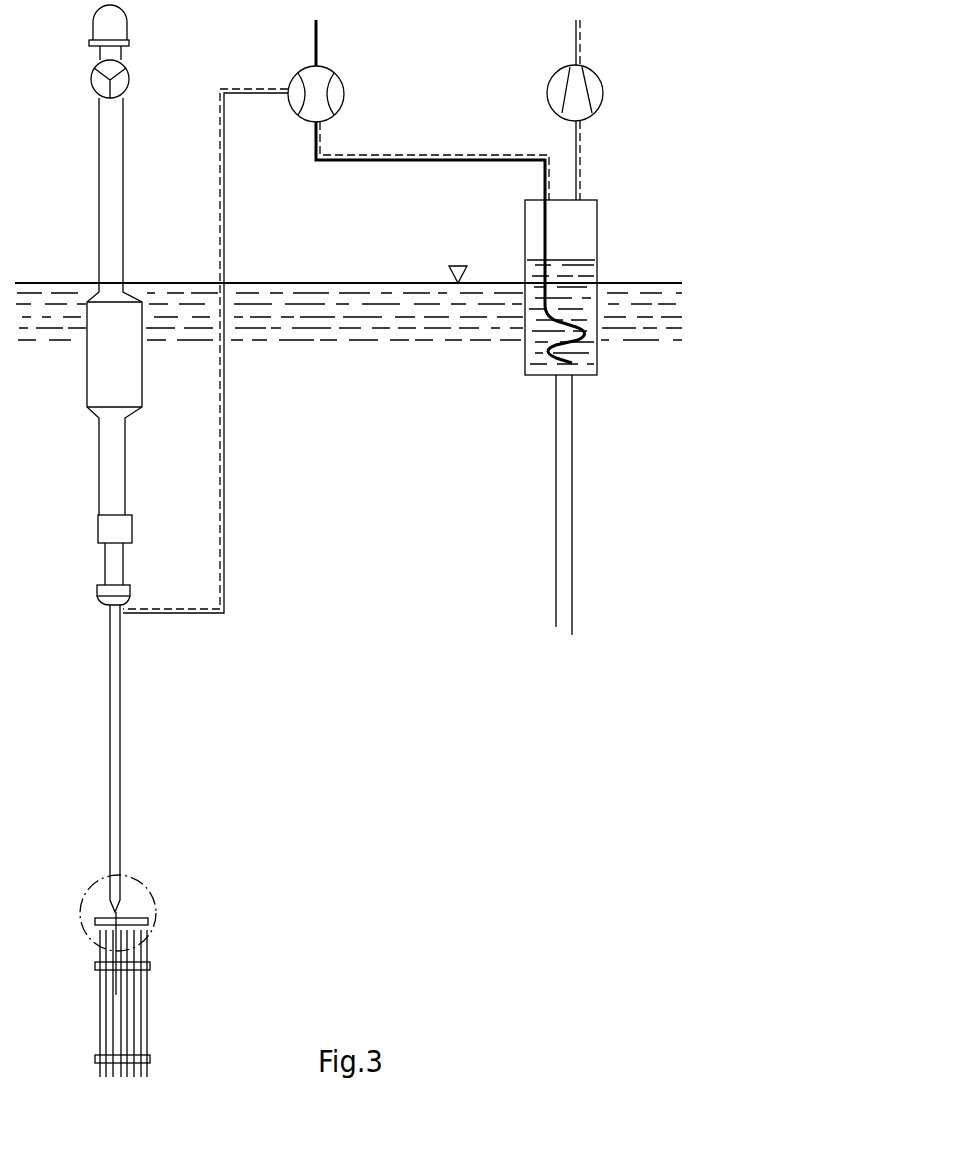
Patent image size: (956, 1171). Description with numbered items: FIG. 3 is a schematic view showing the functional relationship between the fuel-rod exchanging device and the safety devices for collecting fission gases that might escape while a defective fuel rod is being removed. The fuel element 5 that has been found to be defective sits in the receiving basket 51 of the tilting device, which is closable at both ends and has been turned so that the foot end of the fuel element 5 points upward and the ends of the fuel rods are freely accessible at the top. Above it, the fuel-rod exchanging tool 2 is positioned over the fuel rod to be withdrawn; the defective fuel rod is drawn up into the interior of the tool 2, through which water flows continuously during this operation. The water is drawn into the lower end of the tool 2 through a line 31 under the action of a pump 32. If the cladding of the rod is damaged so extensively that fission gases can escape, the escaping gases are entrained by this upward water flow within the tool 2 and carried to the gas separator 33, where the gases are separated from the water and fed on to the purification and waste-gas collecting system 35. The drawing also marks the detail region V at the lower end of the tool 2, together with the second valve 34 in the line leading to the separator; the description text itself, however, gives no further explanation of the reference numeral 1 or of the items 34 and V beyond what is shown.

The float sonde / measuring probe 1 is at (53, 312).
The fuel-rod exchanging tool 2 is at (86, 671).
The line 31 is at (227, 405).
The pump 32 is at (332, 77).
The gas separator 33 is at (594, 241).
The valve 34 is at (597, 87).
The purification and waste-gas collecting system 35 is at (578, 33).
The fuel element 5 is at (148, 983).
The receiving basket 51 is at (138, 1012).
The detail V is at (180, 891).